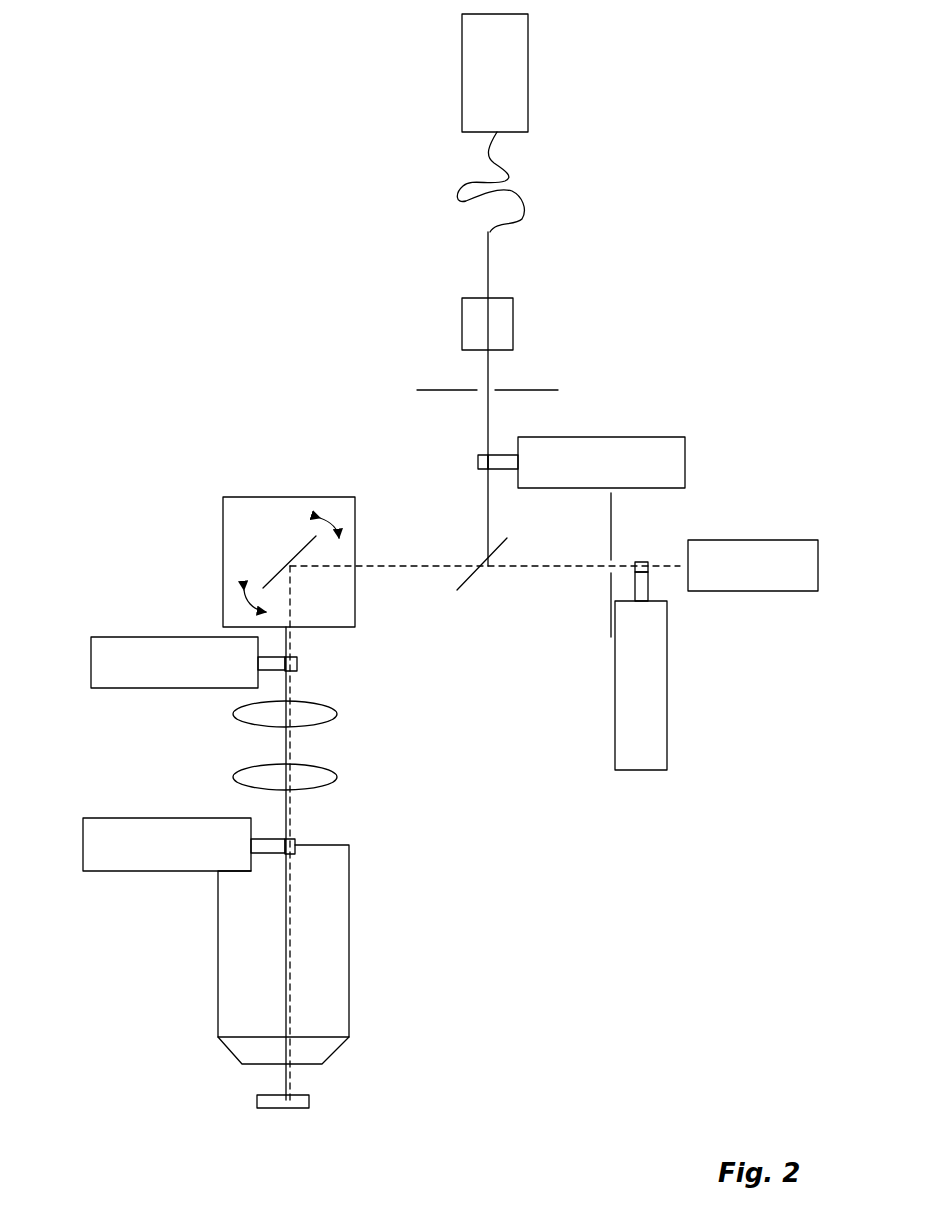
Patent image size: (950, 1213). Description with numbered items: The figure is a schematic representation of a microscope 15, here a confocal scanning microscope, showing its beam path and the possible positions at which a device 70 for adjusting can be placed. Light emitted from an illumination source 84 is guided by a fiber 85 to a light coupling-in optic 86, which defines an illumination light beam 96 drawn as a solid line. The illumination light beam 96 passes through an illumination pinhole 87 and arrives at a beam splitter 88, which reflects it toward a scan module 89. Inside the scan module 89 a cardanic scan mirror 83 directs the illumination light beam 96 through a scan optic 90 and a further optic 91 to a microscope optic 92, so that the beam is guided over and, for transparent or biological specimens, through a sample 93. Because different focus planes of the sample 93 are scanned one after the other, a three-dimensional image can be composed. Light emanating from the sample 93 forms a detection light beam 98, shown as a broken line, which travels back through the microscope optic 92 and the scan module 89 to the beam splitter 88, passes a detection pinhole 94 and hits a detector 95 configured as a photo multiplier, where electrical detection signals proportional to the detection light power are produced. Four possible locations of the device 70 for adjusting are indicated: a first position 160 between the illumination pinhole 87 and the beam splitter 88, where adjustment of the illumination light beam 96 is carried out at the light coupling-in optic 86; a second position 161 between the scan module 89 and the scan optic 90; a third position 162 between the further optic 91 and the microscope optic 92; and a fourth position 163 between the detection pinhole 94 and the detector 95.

The microscope 15 is at (811, 223).
The device for adjusting 70 is at (618, 450).
The cardanic scan mirror 83 is at (315, 517).
The illumination source 84 is at (528, 42).
The fiber 85 is at (517, 172).
The light coupling-in optic 86 is at (513, 312).
The illumination pinhole 87 is at (558, 390).
The beam splitter 88 is at (477, 573).
The scan module 89 is at (250, 523).
The scan optic 90 is at (235, 715).
The further optic 91 is at (235, 782).
The microscope optic 92 is at (245, 963).
The sample 93 is at (262, 1093).
The detection pinhole 94 is at (609, 612).
The detector 95 is at (753, 587).
The illumination light beam 96 is at (485, 433).
The detection light beam 98 is at (528, 567).
The first position 160 is at (480, 467).
The second position 161 is at (297, 660).
The third position 162 is at (295, 843).
The fourth position 163 is at (647, 562).